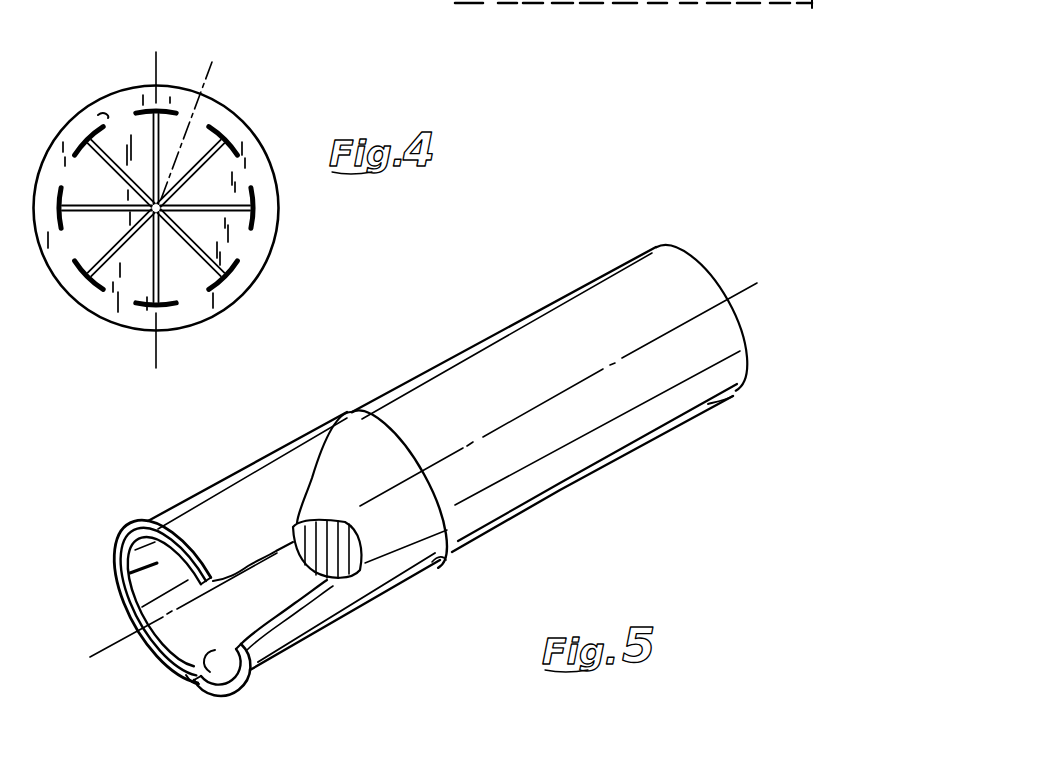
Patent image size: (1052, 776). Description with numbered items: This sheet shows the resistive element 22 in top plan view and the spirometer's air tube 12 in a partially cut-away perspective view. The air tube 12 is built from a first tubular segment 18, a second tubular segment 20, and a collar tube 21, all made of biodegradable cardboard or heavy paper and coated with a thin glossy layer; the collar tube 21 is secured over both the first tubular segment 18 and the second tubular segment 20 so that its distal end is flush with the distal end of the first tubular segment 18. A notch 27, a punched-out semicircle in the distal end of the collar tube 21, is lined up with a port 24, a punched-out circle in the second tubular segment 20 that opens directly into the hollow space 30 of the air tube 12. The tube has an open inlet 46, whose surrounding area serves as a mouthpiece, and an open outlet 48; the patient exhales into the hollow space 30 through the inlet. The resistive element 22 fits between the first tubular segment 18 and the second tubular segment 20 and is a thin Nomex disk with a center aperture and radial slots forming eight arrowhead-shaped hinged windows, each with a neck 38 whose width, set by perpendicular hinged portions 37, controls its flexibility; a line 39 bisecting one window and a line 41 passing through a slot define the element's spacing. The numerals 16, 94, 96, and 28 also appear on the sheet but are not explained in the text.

In FIG. 5, the air tube 12 is at (560, 368).
In FIG. 4, the handle portion 16 is at (750, 5).
In FIG. 5, the first tubular segment 18 is at (183, 686).
In FIG. 5, the second tubular segment 20 is at (640, 247).
In FIG. 5, the collar tube 21 is at (230, 470).
In FIG. 4, the resistive element 22 is at (100, 329).
In FIG. 5, the resistive element 22 is at (348, 412).
In FIG. 5, the port 24 is at (432, 555).
In FIG. 5, the notch 27 is at (193, 686).
In FIG. 5, the longitudinal axis 28 is at (113, 647).
In FIG. 5, the hollow space 30 is at (127, 580).
In FIG. 4, the perpendicular hinged portion 37 is at (103, 120).
In FIG. 4, the neck 38 is at (257, 161).
In FIG. 4, the line bisecting a hinged window 39 is at (212, 64).
In FIG. 4, the line passing through a slot 41 is at (156, 66).
In FIG. 5, the open inlet 46 is at (748, 362).
In FIG. 5, the open outlet 48 is at (217, 692).
In FIG. 4, the connector 94 is at (567, 4).
In FIG. 4, the port 96 is at (652, 3).